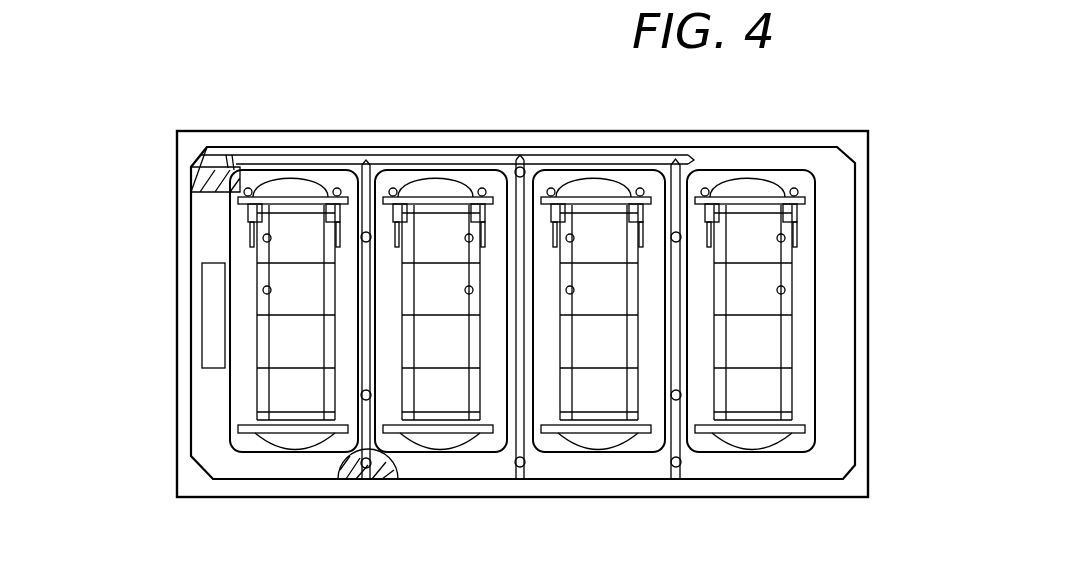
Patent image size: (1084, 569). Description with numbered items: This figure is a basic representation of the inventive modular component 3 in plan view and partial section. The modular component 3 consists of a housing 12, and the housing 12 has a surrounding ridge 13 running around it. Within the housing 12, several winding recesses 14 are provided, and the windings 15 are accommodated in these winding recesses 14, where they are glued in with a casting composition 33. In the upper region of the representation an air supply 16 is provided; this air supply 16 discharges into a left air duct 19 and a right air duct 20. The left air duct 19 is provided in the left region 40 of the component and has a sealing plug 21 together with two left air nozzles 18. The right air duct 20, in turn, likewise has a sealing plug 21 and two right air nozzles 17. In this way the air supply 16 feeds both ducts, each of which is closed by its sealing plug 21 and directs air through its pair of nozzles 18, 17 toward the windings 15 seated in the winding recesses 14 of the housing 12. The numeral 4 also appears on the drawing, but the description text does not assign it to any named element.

The modular component 3 is at (536, 287).
The compartment 4 is at (798, 445).
The housing 12 is at (818, 163).
The surrounding ridge 13 is at (858, 148).
The winding recesses 14 is at (282, 330).
The windings 15 is at (310, 242).
The air supply 16 is at (485, 162).
The right air nozzles 17 is at (687, 235).
The left air nozzles 18 is at (362, 392).
The left air duct 19 is at (357, 447).
The right air duct 20 is at (690, 450).
The sealing plug 21 is at (367, 468).
The casting composition 33 is at (335, 189).
The left region 40 is at (248, 412).